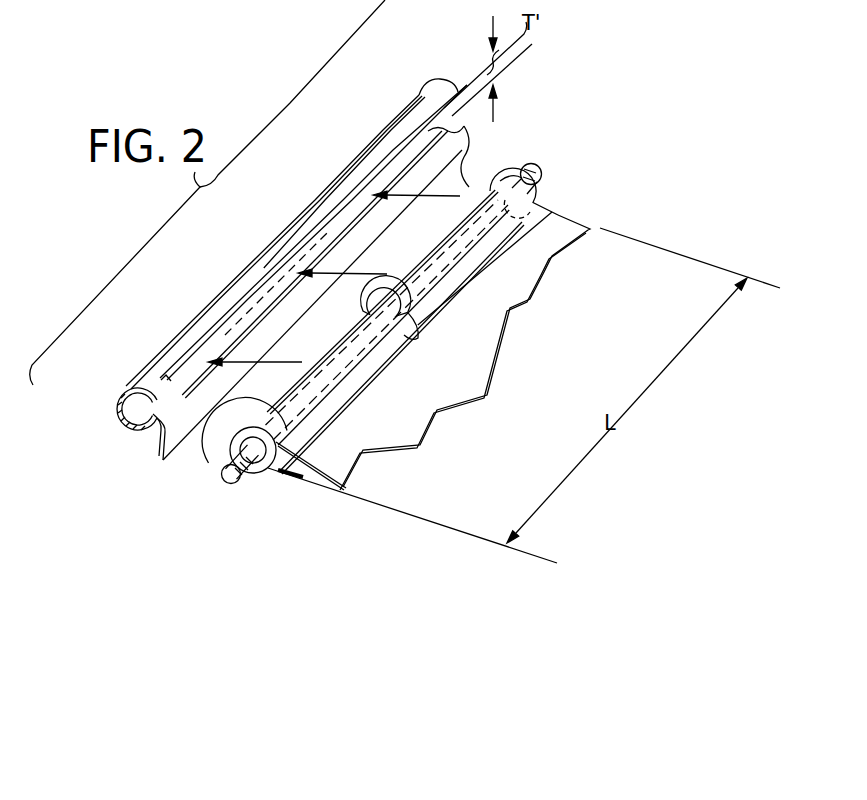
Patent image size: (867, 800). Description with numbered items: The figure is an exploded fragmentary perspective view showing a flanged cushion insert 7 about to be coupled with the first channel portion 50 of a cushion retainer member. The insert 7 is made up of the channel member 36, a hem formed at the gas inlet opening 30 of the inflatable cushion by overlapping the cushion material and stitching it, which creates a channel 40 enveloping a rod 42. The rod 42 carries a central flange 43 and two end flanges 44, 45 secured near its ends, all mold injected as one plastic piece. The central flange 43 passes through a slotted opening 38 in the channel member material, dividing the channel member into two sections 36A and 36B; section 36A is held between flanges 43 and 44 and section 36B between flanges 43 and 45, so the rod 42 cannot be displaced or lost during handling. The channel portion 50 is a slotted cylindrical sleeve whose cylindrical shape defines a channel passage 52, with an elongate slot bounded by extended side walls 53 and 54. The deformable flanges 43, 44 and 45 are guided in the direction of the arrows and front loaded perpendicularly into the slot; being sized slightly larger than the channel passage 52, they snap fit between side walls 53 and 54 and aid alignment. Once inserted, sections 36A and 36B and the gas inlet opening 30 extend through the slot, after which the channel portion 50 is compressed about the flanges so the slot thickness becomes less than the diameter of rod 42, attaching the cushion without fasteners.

The flanged cushion insert 7 is at (632, 222).
The gas inlet opening 30 is at (560, 260).
The channel member 36 is at (558, 215).
The channel member section 36A is at (208, 463).
The channel member section 36B is at (488, 194).
The slotted opening 38 is at (420, 340).
The channel 40 is at (282, 476).
The rod 42 is at (556, 157).
The central flange 43 is at (362, 311).
The end flange 44 is at (255, 474).
The end flange 45 is at (521, 168).
The first channel portion 50 is at (190, 336).
The channel passage 52 is at (127, 414).
The side wall 53 is at (410, 132).
The side wall 54 is at (158, 440).